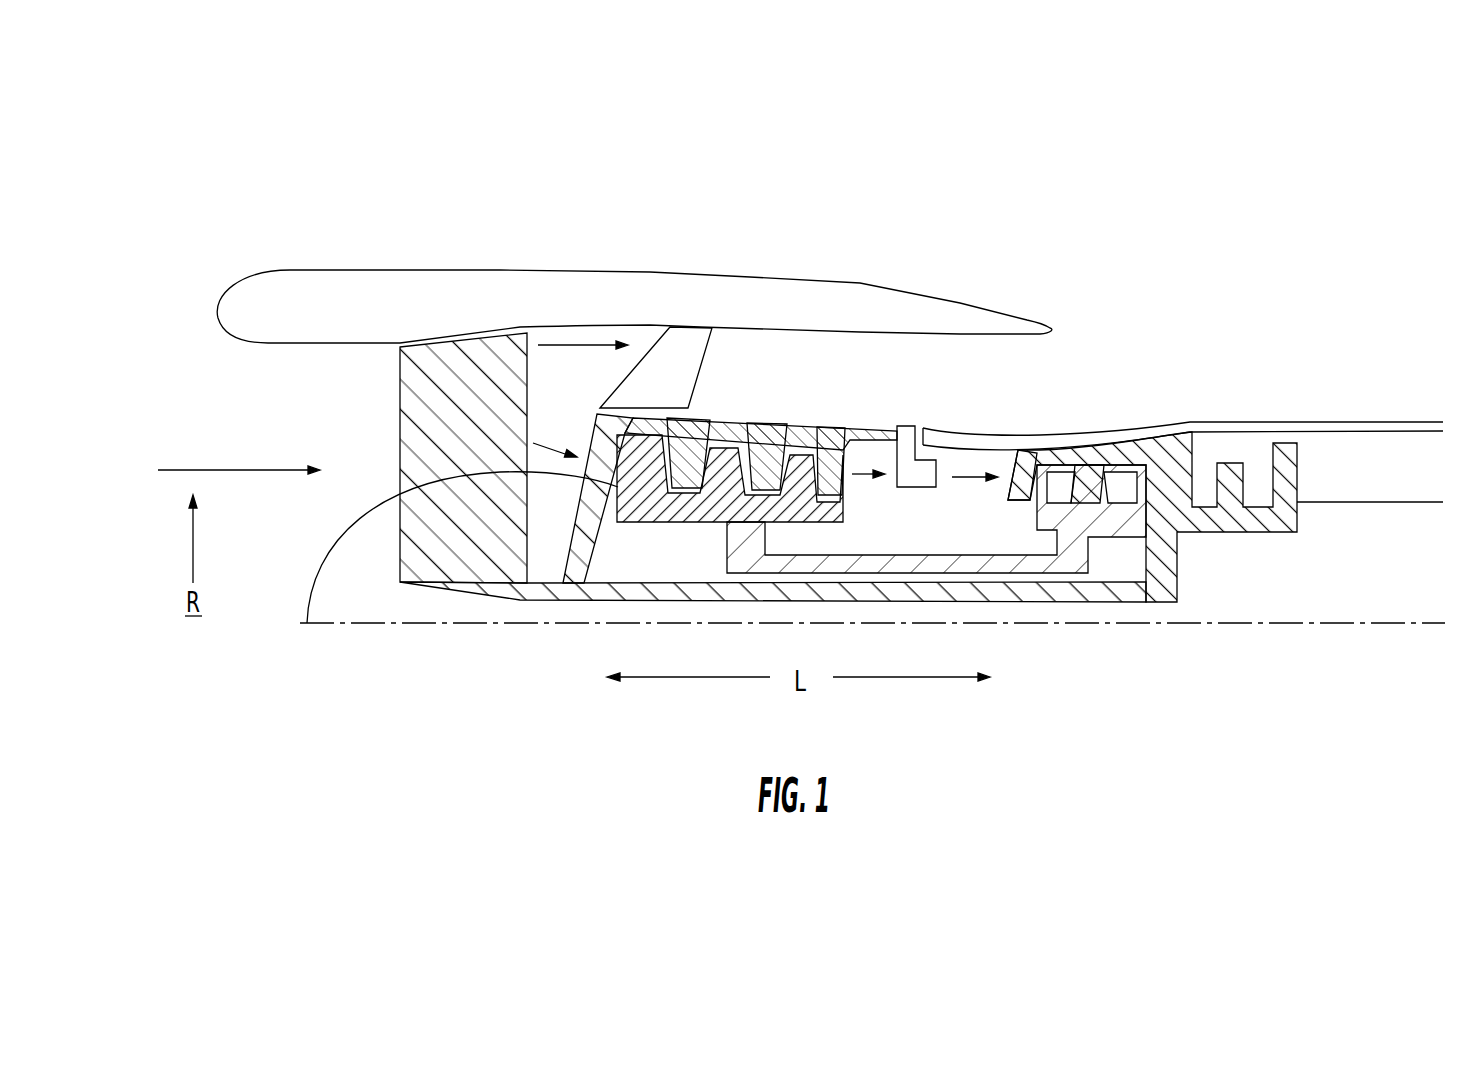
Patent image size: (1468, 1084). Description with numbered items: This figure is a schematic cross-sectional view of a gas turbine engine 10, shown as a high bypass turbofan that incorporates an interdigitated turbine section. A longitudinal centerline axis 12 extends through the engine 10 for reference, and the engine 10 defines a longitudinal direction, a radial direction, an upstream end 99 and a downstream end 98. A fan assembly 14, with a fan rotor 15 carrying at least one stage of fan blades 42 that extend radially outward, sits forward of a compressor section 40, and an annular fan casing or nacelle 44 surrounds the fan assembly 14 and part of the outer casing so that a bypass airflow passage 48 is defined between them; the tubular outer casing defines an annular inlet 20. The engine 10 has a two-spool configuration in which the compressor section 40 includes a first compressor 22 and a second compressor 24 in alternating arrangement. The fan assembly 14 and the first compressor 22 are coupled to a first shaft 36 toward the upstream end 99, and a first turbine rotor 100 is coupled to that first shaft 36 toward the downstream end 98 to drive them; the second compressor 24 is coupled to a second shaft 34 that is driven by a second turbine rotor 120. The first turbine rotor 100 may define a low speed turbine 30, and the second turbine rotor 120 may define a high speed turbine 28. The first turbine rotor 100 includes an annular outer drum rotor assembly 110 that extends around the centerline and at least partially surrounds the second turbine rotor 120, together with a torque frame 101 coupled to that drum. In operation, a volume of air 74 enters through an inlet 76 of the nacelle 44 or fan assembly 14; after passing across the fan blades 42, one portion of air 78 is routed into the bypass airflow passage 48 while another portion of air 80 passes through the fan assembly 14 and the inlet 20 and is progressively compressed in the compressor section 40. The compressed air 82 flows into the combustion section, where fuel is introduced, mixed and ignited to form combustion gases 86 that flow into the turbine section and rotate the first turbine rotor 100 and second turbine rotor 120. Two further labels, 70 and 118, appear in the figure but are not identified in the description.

The gas turbine engine 10 is at (835, 222).
The axial centerline axis 12 is at (1205, 625).
The fan assembly 14 is at (366, 470).
The fan rotor 15 is at (407, 560).
The annular inlet 20 is at (585, 417).
The first compressor 22 is at (693, 415).
The second compressor 24 is at (680, 513).
The high speed turbine 28 is at (1040, 520).
The low speed turbine 30 is at (1292, 465).
The second shaft 34 is at (877, 560).
The first shaft 36 is at (740, 590).
The compressor section 40 is at (752, 397).
The fan blades 42 is at (407, 362).
The nacelle 44 is at (415, 307).
The bypass airflow passage 48 is at (866, 375).
The region 70 is at (1410, 495).
The air 74 is at (193, 468).
The inlet 76 is at (273, 420).
The bypass air 78 is at (567, 343).
The core air 80 is at (543, 452).
The compressed air 82 is at (867, 482).
The combustion gases 86 is at (968, 473).
The downstream end 98 is at (1448, 574).
The upstream end 99 is at (115, 558).
The first turbine rotor 100 is at (1180, 440).
The torque frame 101 is at (1180, 465).
The outer drum rotor assembly 110 is at (834, 447).
The tab 118 is at (910, 423).
The second turbine rotor 120 is at (1112, 530).